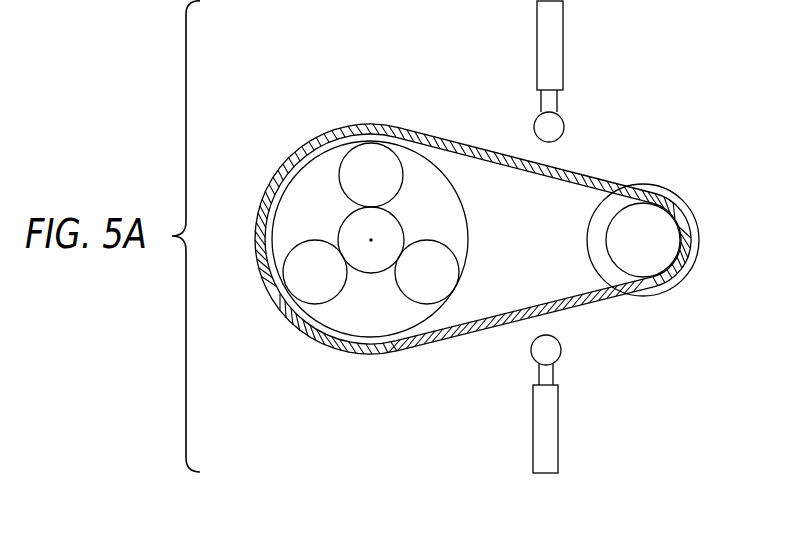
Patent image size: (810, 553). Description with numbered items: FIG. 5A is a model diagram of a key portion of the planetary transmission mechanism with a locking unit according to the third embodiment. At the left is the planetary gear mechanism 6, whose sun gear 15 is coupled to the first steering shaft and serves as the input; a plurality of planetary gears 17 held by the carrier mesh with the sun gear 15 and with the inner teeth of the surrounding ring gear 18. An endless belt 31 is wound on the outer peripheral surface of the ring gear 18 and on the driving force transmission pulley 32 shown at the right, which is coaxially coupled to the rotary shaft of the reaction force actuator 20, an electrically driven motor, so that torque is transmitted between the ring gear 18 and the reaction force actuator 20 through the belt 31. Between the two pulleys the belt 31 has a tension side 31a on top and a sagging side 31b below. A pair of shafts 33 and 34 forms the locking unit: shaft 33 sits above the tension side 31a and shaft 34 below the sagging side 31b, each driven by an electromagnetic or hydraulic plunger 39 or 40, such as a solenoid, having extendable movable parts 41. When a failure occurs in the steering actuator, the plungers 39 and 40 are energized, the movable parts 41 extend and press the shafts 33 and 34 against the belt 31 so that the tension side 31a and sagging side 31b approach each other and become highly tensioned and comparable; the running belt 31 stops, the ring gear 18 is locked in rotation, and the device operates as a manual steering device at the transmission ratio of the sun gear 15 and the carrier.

The planetary gear mechanism 6 is at (318, 87).
The sun gear 15 is at (345, 233).
The planetary gears 17 is at (369, 150).
The ring gear 18 is at (272, 262).
The reaction force actuator 20 is at (700, 241).
The endless belt 31 is at (430, 120).
The tension side 31a is at (597, 177).
The sagging side 31b is at (428, 355).
The driving force transmission pulley 32 is at (668, 257).
The shaft 33 is at (557, 127).
The shaft 34 is at (555, 350).
The plunger 39 is at (572, 43).
The plunger 40 is at (570, 428).
The movable parts 41 is at (550, 106).